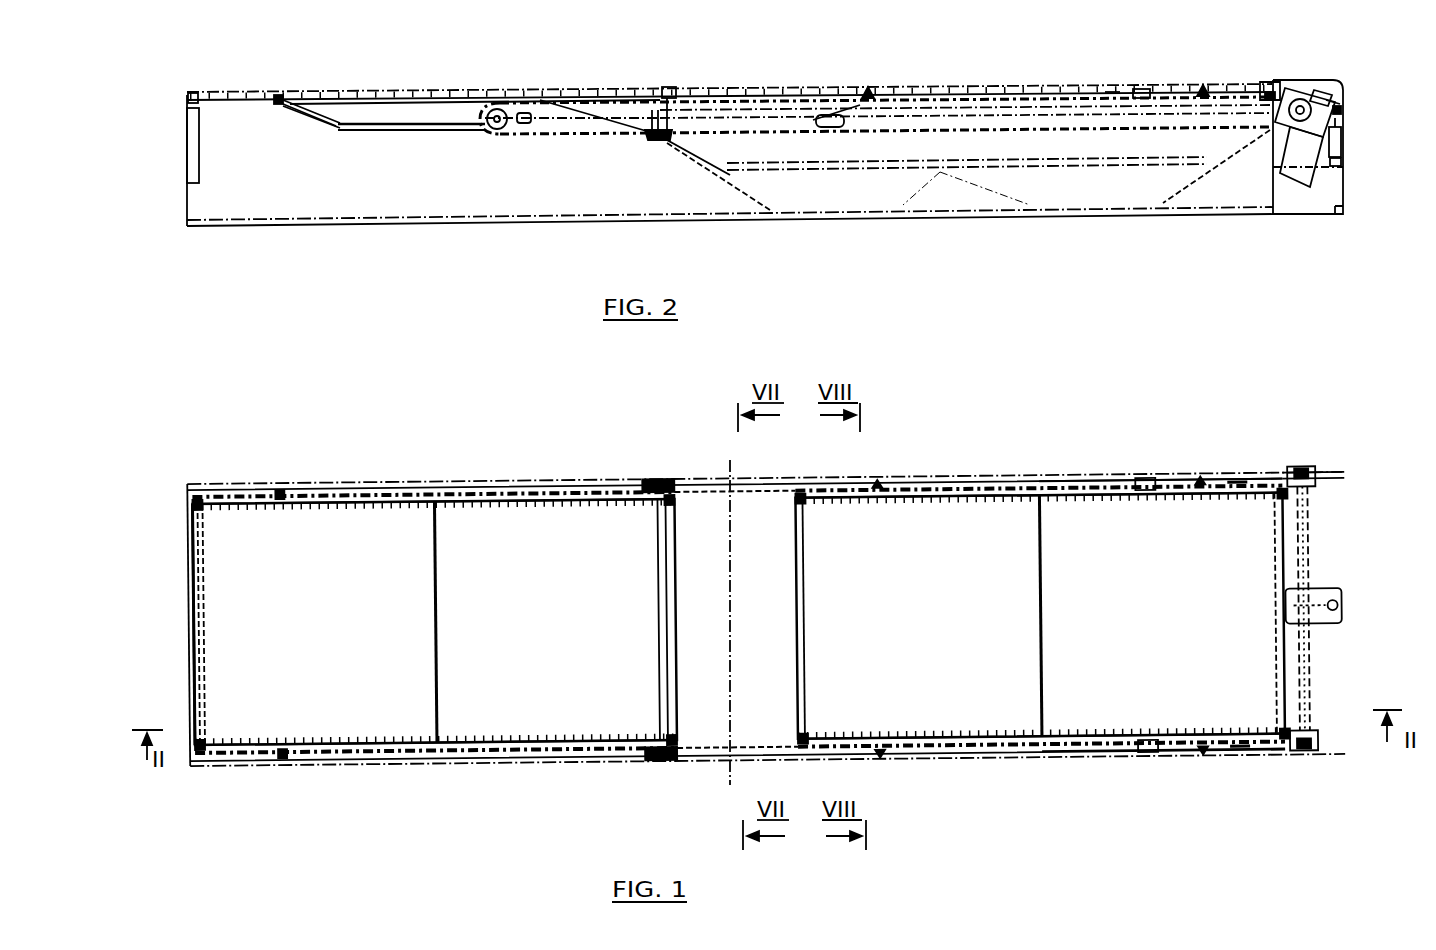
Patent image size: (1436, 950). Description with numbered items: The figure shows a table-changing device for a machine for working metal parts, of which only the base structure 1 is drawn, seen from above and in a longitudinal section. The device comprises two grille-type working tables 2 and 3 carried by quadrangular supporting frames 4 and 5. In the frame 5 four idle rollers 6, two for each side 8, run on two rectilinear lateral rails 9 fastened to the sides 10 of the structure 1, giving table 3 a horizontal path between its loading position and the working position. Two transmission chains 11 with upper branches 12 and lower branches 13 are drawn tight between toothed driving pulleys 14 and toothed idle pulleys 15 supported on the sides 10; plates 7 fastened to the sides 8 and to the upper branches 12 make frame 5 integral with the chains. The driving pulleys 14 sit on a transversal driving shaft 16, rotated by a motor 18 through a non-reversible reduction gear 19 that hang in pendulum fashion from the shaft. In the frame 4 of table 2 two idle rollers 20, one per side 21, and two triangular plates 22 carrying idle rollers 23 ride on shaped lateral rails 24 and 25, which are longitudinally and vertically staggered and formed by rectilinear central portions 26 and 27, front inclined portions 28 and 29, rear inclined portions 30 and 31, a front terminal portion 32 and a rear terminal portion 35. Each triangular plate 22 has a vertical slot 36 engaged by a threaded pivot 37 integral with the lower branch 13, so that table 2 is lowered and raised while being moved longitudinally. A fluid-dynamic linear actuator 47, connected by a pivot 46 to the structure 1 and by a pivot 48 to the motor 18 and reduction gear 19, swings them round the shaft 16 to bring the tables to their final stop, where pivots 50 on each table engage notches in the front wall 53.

In FIG. 2, the base structure 1 is at (184, 210).
In FIG. 1, the base structure 1 is at (320, 782).
In FIG. 2, the working table 2 is at (468, 86).
In FIG. 1, the working table 2 is at (683, 582).
In FIG. 2, the working table 3 is at (1046, 80).
In FIG. 1, the working table 3 is at (794, 584).
In FIG. 2, the supporting frame 4 is at (490, 90).
In FIG. 1, the supporting frame 4 is at (680, 630).
In FIG. 2, the supporting frame 5 is at (1088, 90).
In FIG. 1, the supporting frame 5 is at (798, 624).
In FIG. 2, the idle roller 6 is at (870, 86).
In FIG. 1, the idle roller 6 is at (880, 482).
In FIG. 2, the plate 7 is at (1140, 88).
In FIG. 1, the plate 7 is at (1148, 478).
In FIG. 2, the side 8 is at (948, 90).
In FIG. 1, the side 8 is at (975, 478).
In FIG. 2, the rail 9 is at (775, 92).
In FIG. 1, the rail 9 is at (810, 484).
In FIG. 2, the side 10 is at (531, 201).
In FIG. 1, the side 10 is at (925, 480).
In FIG. 2, the transmission chain 11 is at (717, 92).
In FIG. 1, the transmission chain 11 is at (738, 484).
In FIG. 2, the upper branch 12 is at (1242, 88).
In FIG. 1, the upper branch 12 is at (1240, 478).
In FIG. 2, the lower branch 13 is at (1148, 128).
In FIG. 2, the toothed driving pulley 14 is at (1300, 98).
In FIG. 1, the toothed driving pulley 14 is at (1320, 470).
In FIG. 2, the toothed idle pulley 15 is at (490, 132).
In FIG. 2, the driving shaft 16 is at (1320, 92).
In FIG. 1, the driving shaft 16 is at (1312, 545).
In FIG. 2, the motor 18 is at (1300, 190).
In FIG. 2, the non-reversible reduction gear 19 is at (1338, 104).
In FIG. 1, the non-reversible reduction gear 19 is at (1336, 600).
In FIG. 2, the idle roller 20 is at (280, 95).
In FIG. 1, the idle roller 20 is at (280, 490).
In FIG. 2, the side 21 is at (385, 92).
In FIG. 1, the side 21 is at (505, 486).
In FIG. 2, the triangular plate 22 is at (585, 125).
In FIG. 2, the idle roller 23 is at (660, 142).
In FIG. 1, the idle roller 23 is at (675, 484).
In FIG. 2, the shaped lateral rail 24 is at (375, 130).
In FIG. 1, the shaped lateral rail 24 is at (360, 486).
In FIG. 2, the shaped lateral rail 25 is at (820, 168).
In FIG. 1, the shaped lateral rail 25 is at (1062, 478).
In FIG. 2, the rectilinear central portion 26 is at (425, 132).
In FIG. 2, the rectilinear central portion 27 is at (1045, 175).
In FIG. 2, the front inclined portion 28 is at (315, 128).
In FIG. 2, the front inclined portion 29 is at (705, 160).
In FIG. 2, the rear inclined portion 30 is at (850, 120).
In FIG. 2, the rear inclined portion 31 is at (1238, 160).
In FIG. 2, the front rectilinear terminal portion 32 is at (285, 108).
In FIG. 2, the rear rectilinear terminal portion 35 is at (1268, 145).
In FIG. 2, the vertical slot 36 is at (654, 130).
In FIG. 2, the threaded pivot 37 is at (652, 140).
In FIG. 2, the pivot 46 is at (1340, 166).
In FIG. 2, the fluid-dynamic linear actuator 47 is at (1341, 140).
In FIG. 2, the pivot 48 is at (1342, 110).
In FIG. 2, the pivot 50 is at (187, 108).
In FIG. 1, the pivot 50 is at (195, 502).
In FIG. 2, the front wall 53 is at (188, 95).
In FIG. 1, the front wall 53 is at (195, 600).